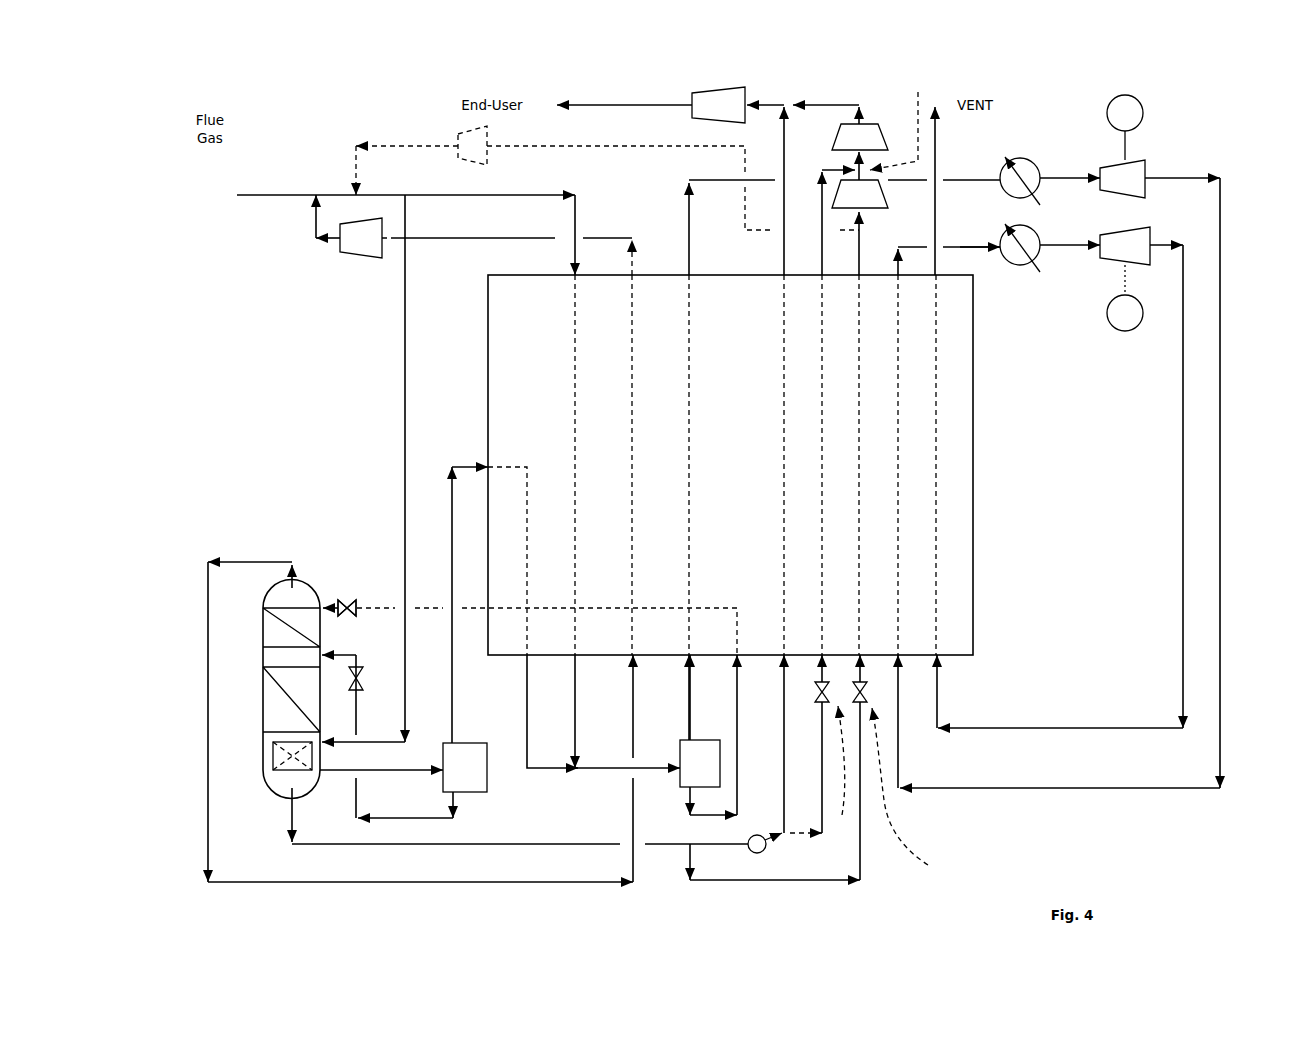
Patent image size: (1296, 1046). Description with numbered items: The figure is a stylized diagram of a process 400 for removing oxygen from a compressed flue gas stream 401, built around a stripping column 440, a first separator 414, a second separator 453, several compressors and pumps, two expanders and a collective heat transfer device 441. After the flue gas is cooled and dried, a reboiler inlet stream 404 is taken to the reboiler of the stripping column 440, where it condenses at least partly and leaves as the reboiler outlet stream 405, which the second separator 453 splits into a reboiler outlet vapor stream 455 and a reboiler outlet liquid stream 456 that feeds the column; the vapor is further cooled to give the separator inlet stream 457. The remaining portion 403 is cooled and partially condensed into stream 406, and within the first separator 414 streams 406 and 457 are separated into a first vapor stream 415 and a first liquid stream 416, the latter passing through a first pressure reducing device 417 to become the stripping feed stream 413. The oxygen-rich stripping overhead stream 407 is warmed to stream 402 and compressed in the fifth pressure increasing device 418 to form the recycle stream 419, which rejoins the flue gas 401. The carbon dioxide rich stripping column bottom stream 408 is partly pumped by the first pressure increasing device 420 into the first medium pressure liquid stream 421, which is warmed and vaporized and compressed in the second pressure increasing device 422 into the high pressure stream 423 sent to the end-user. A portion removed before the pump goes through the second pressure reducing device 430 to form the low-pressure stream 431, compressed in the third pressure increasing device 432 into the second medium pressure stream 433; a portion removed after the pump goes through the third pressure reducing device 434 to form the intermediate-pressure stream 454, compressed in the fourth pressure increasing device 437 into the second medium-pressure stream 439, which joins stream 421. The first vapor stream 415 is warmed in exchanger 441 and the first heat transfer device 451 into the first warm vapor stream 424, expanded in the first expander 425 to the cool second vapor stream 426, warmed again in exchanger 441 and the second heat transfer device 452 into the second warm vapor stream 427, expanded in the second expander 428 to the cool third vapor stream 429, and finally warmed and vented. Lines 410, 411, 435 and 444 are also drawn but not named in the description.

The process 400 is at (313, 403).
The compressed flue gas stream 401 is at (387, 195).
The warmed stripping column overhead stream 402 is at (507, 560).
The remaining portion of the flue gas 403 is at (593, 226).
The reboiler inlet stream 404 is at (363, 468).
The reboiler outlet stream 405 is at (381, 781).
The cooled partially condensed flue gas stream 406 is at (611, 521).
The stripping overhead stream 407 is at (399, 709).
The stripping column bottom stream 408 is at (500, 823).
The stream 410 is at (827, 460).
The stream 411 is at (822, 486).
The stripping feed stream 413 is at (330, 603).
The first separator 414 is at (700, 763).
The first vapor stream 415 is at (707, 697).
The first liquid stream 416 is at (732, 735).
The first pressure reducing device 417 is at (350, 600).
The fifth pressure increasing device 418 is at (361, 238).
The recycle stream 419 is at (305, 222).
The first pressure increasing device 420 is at (775, 856).
The first medium pressure liquid stream 421 is at (743, 470).
The second pressure increasing device 422 is at (718, 105).
The high pressure stream 423 is at (624, 95).
The first warm vapor stream 424 is at (1070, 165).
The first expander 425 is at (1122, 146).
The cool second vapor stream 426 is at (1078, 483).
The second warm vapor stream 427 is at (999, 246).
The second expander 428 is at (1125, 279).
The cool third vapor stream 429 is at (1059, 417).
The second pressure reducing device 430 is at (915, 794).
The low-pressure stream 431 is at (844, 433).
The third pressure increasing device 432 is at (860, 194).
The second medium pressure stream 433 is at (897, 120).
The third pressure reducing device 434 is at (838, 766).
The valve 435 is at (851, 767).
The fourth pressure increasing device 437 is at (860, 152).
The second medium-pressure stream 439 is at (803, 102).
The stripping column 440 is at (273, 713).
The collective heat transfer device 441 is at (486, 355).
The control signal 444 is at (607, 170).
The first heat transfer device 451 is at (1018, 170).
The second heat transfer device 452 is at (1018, 277).
The second separator 453 is at (465, 767).
The intermediate-pressure stream 454 is at (755, 505).
The reboiler outlet vapor stream 455 is at (470, 605).
The reboiler outlet liquid stream 456 is at (387, 746).
The separator inlet stream 457 is at (533, 634).